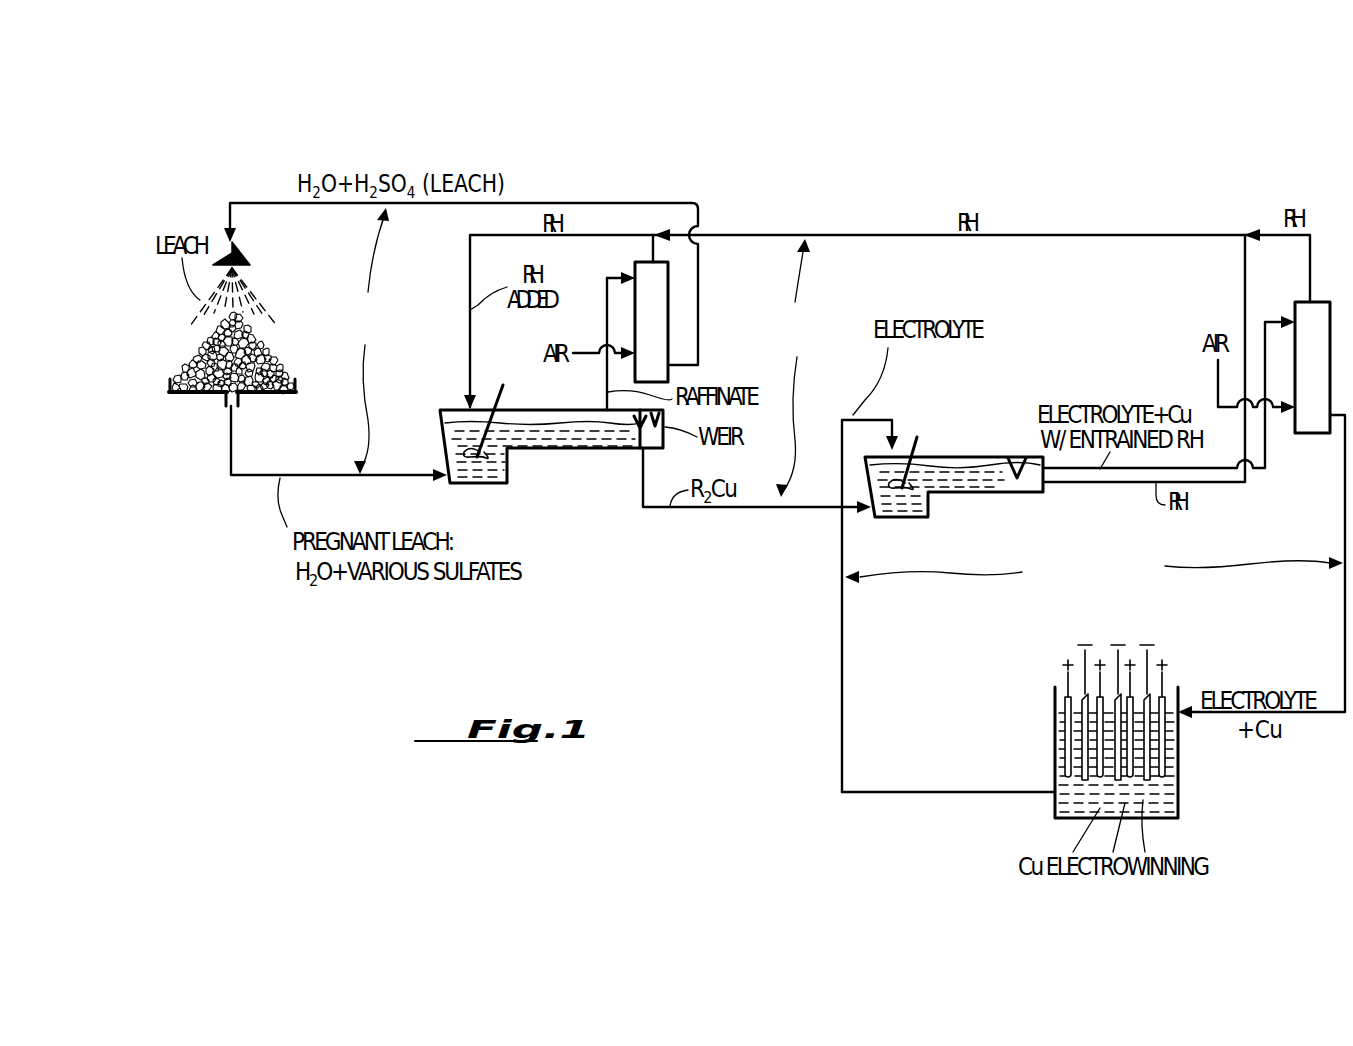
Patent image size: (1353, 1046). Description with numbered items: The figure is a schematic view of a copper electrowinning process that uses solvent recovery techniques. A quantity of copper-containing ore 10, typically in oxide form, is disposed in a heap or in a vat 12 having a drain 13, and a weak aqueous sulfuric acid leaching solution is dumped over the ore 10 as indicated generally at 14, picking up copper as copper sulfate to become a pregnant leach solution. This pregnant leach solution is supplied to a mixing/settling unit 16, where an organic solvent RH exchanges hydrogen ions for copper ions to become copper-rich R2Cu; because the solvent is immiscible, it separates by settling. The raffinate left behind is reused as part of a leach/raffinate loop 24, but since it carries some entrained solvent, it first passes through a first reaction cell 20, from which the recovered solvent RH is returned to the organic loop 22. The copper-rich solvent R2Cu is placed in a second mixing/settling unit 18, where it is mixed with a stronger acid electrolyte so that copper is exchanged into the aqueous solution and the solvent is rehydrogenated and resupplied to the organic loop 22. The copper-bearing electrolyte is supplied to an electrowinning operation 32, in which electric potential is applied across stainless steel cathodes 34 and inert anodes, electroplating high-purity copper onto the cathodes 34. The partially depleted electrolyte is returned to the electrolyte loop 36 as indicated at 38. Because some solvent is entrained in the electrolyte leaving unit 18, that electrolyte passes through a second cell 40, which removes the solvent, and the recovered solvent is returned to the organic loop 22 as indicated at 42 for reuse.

The ore 10 is at (185, 343).
The vat 12 is at (208, 396).
The drain 13 is at (241, 398).
The leaching solution dumping 14 is at (250, 263).
The mixing/settling unit 16 is at (584, 466).
The second mixing/settling unit 18 is at (945, 444).
The first reaction cell 20 is at (663, 331).
The organic loop 22 is at (828, 298).
The leach/raffinate loop 24 is at (324, 299).
The electrowinning operation 32 is at (1180, 772).
The cathodes 34 is at (1166, 683).
The electrolyte loop 36 is at (1142, 570).
The electrolyte return 38 is at (1064, 794).
The second cell 40 is at (1325, 380).
The organic solvent return 42 is at (1247, 232).